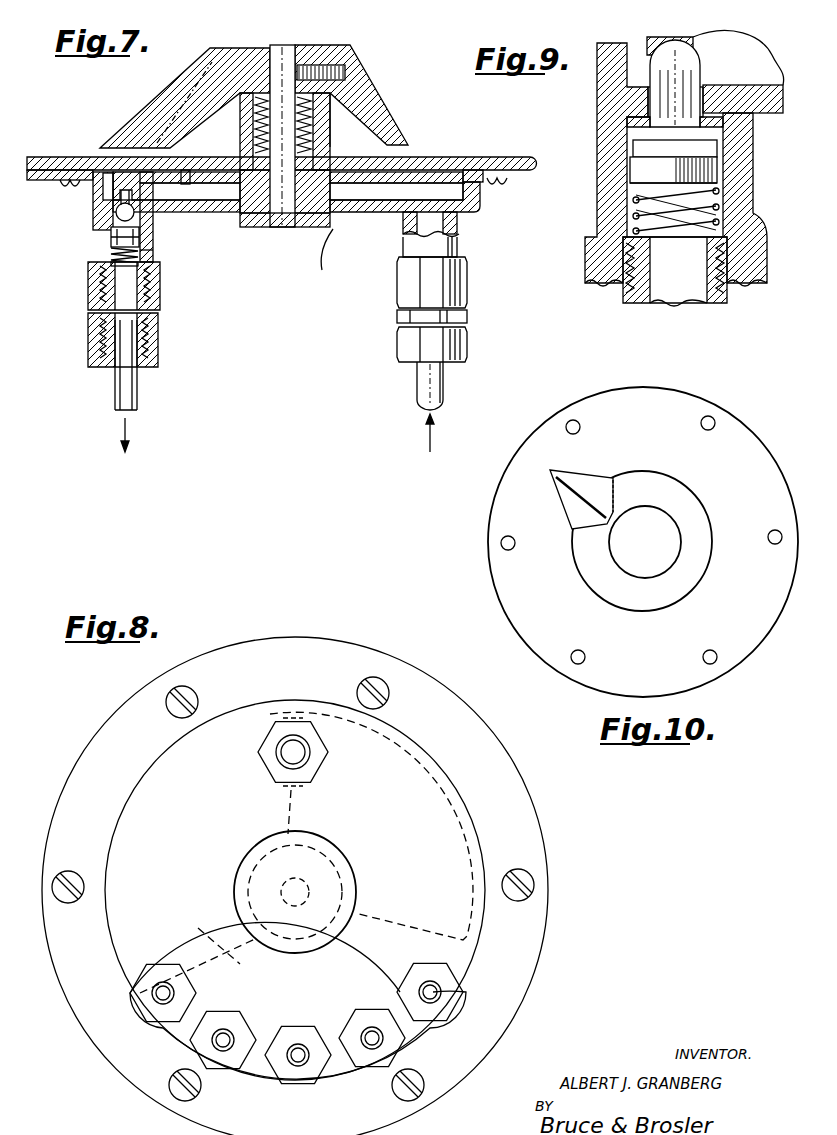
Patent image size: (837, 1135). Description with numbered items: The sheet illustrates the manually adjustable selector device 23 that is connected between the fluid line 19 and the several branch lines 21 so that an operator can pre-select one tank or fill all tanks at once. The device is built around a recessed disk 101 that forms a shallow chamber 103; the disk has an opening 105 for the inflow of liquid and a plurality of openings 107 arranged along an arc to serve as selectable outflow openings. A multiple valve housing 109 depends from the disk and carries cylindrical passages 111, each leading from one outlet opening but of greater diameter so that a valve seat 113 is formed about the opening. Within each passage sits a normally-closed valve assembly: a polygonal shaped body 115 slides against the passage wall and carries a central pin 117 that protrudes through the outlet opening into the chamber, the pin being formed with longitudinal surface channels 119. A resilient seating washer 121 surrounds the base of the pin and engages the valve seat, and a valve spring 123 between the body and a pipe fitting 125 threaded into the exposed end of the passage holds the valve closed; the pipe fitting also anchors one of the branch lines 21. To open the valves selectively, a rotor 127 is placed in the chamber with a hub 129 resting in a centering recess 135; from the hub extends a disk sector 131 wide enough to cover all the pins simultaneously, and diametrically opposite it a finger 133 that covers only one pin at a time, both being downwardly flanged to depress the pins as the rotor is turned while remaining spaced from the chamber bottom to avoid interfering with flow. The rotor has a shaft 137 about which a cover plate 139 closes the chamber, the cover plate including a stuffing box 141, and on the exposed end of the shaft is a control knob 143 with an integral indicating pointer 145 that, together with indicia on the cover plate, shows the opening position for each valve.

In FIG. 7, the fluid line 19 is at (445, 390).
In FIG. 7, the branch line 21 is at (138, 388).
In FIG. 7, the selector device 23 is at (450, 146).
In FIG. 7, the recessed disk 101 is at (373, 214).
In FIG. 8, the recessed disk 101 is at (137, 812).
In FIG. 7, the shallow chamber 103 is at (193, 203).
In FIG. 9, the shallow chamber 103 is at (752, 63).
In FIG. 7, the opening 105 is at (457, 214).
In FIG. 8, the opening 105 is at (292, 753).
In FIG. 7, the openings 107 is at (146, 206).
In FIG. 9, the openings 107 is at (693, 95).
In FIG. 8, the openings 107 is at (225, 1040).
In FIG. 7, the multiple valve housing 109 is at (156, 244).
In FIG. 9, the multiple valve housing 109 is at (753, 178).
In FIG. 8, the multiple valve housing 109 is at (365, 1010).
In FIG. 7, the cylindrical passages 111 is at (108, 251).
In FIG. 9, the cylindrical passages 111 is at (633, 201).
In FIG. 7, the valve seat 113 is at (138, 217).
In FIG. 9, the valve seat 113 is at (703, 114).
In FIG. 7, the polygonal shaped body 115 is at (110, 241).
In FIG. 9, the polygonal shaped body 115 is at (640, 172).
In FIG. 7, the pin 117 is at (118, 214).
In FIG. 9, the longitudinal surface channels 119 is at (690, 72).
In FIG. 9, the seating washer 121 is at (643, 149).
In FIG. 7, the valve spring 123 is at (138, 266).
In FIG. 9, the valve spring 123 is at (660, 228).
In FIG. 7, the pipe fitting 125 is at (90, 326).
In FIG. 9, the pipe fitting 125 is at (700, 302).
In FIG. 7, the rotor 127 is at (355, 272).
In FIG. 8, the rotor 127 is at (280, 849).
In FIG. 7, the hub 129 is at (240, 199).
In FIG. 7, the disk sector 131 is at (376, 178).
In FIG. 8, the disk sector 131 is at (457, 810).
In FIG. 7, the finger 133 is at (186, 172).
In FIG. 9, the finger 133 is at (690, 28).
In FIG. 8, the finger 133 is at (205, 937).
In FIG. 7, the centering recess 135 is at (272, 228).
In FIG. 7, the shaft 137 is at (279, 55).
In FIG. 7, the cover plate 139 is at (473, 156).
In FIG. 10, the cover plate 139 is at (520, 586).
In FIG. 7, the stuffing box 141 is at (330, 120).
In FIG. 7, the control knob 143 is at (316, 47).
In FIG. 10, the control knob 143 is at (703, 516).
In FIG. 7, the indicating pointer 145 is at (127, 121).
In FIG. 10, the indicating pointer 145 is at (562, 494).